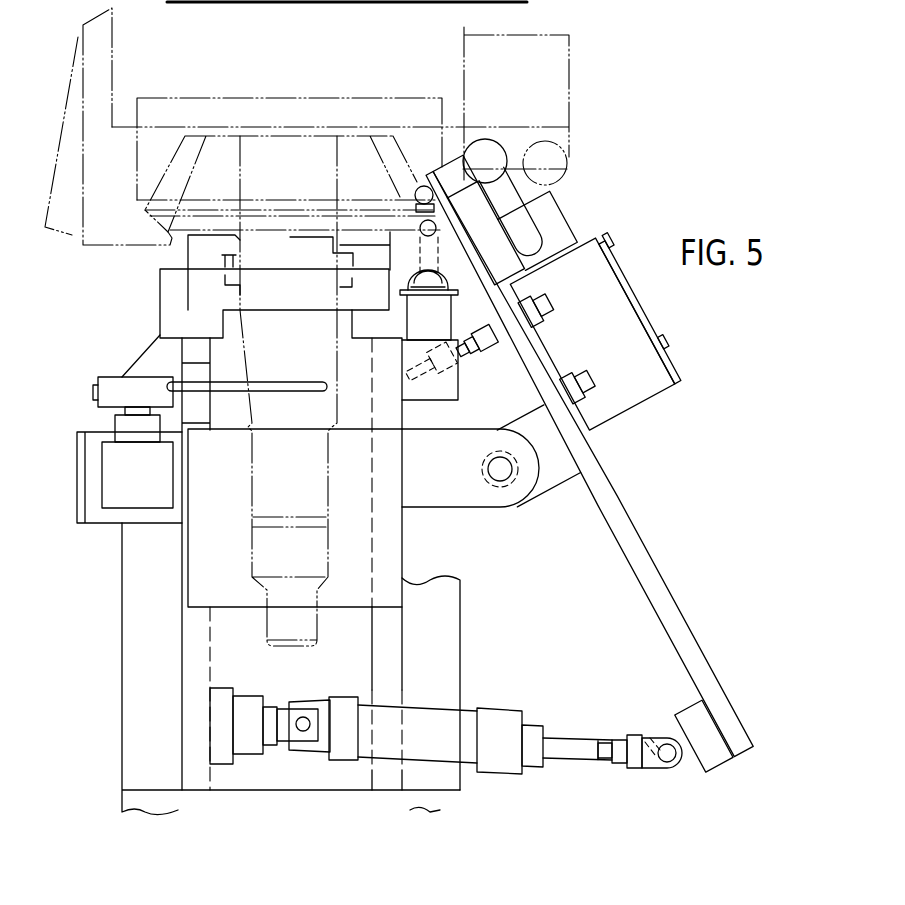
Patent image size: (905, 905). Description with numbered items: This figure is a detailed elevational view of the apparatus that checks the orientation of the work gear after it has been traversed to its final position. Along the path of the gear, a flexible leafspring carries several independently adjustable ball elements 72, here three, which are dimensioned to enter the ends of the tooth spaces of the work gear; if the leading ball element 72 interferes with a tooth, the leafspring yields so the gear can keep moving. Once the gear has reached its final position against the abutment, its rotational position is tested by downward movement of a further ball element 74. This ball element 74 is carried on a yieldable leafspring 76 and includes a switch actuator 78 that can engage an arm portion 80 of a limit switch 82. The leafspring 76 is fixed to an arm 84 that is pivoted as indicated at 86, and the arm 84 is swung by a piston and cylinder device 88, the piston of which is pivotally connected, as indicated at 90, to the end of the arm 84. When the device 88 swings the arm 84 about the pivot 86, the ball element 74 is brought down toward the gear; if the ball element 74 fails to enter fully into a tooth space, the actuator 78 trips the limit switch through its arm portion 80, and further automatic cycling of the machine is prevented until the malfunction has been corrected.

The ball element 72 is at (443, 236).
The ball element 74 is at (415, 194).
The yieldable leafspring 76 is at (456, 300).
The switch actuator 78 is at (447, 165).
The arm portion 80 is at (525, 220).
The limit switch 82 is at (622, 320).
The arm 84 is at (618, 509).
The pivot 86 is at (503, 475).
The piston and cylinder device 88 is at (430, 708).
The pivotal connection 90 is at (670, 763).